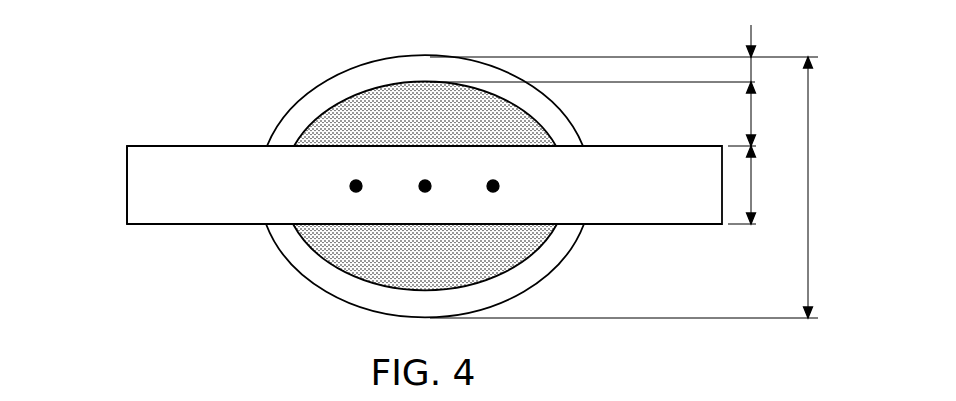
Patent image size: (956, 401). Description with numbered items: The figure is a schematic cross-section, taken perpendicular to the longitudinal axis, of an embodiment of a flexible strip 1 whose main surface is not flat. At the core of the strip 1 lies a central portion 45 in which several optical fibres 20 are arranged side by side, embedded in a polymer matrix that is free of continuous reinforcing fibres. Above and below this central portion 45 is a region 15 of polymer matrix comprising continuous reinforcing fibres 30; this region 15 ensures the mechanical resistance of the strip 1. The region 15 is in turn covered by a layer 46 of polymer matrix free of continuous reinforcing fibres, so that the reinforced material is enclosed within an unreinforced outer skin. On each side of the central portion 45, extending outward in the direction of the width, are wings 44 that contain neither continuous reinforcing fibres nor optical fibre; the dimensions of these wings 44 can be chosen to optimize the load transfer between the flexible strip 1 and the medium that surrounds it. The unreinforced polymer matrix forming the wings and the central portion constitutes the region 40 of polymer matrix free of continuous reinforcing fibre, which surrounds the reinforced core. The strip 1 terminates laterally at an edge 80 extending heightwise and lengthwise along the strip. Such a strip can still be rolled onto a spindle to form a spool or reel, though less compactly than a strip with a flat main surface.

The flexible strip 1 is at (638, 118).
The region of polymer matrix comprising continuous reinforcing fibres 15 is at (431, 90).
The optical fibre 20 is at (418, 195).
The continuous reinforcing fibres 30 is at (487, 117).
The region of polymer matrix free of continuous reinforcing fibre 40 is at (638, 228).
The wings 44 is at (170, 162).
The central portion 45 is at (320, 197).
The layer of polymer matrix free of continuous reinforcing fibres 46 is at (355, 82).
The edge 80 is at (126, 202).